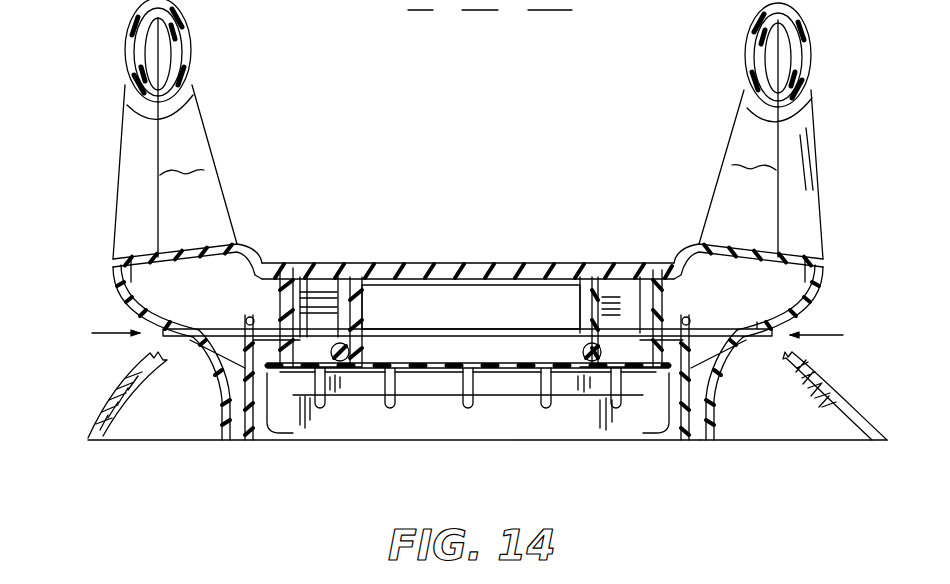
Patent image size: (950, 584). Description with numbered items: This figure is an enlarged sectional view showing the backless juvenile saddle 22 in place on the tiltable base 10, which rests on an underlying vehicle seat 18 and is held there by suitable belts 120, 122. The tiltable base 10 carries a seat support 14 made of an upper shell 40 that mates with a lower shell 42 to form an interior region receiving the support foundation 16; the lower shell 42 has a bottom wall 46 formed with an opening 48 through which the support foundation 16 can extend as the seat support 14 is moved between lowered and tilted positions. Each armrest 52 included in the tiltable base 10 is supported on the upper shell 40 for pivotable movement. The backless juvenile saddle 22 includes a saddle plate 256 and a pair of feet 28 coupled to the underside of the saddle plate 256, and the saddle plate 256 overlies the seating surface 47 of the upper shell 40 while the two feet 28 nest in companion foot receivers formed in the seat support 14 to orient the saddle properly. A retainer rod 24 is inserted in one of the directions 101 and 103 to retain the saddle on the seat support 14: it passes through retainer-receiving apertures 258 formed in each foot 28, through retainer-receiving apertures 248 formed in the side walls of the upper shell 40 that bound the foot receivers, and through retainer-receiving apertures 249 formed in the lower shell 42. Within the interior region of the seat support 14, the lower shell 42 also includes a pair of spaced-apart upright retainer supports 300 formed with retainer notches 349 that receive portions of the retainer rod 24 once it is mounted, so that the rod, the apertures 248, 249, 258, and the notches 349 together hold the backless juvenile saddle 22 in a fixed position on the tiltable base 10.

The tiltable base 10 is at (109, 167).
The armrest 52 is at (808, 25).
The seat support 14 is at (818, 295).
The upper shell 40 is at (113, 260).
The lower shell 42 is at (118, 289).
The upright retainer support 300 is at (243, 357).
The bottom wall 46 is at (242, 440).
The opening 48 is at (267, 440).
The retainer-receiving aperture 249 is at (192, 330).
The retainer notch 349 is at (246, 318).
The retainer-receiving aperture 248 is at (250, 323).
The retainer-receiving aperture 258 is at (300, 333).
The foot 28 is at (352, 337).
The seating surface 47 is at (500, 277).
The saddle plate 256 is at (432, 268).
The backless juvenile saddle 22 is at (467, 263).
The retainer rod 24 is at (505, 340).
The support foundation 16 is at (410, 418).
The vehicle seat 18 is at (768, 423).
The belt 120 is at (132, 402).
The belt 122 is at (822, 398).
The direction 101 is at (835, 335).
The direction 103 is at (110, 333).